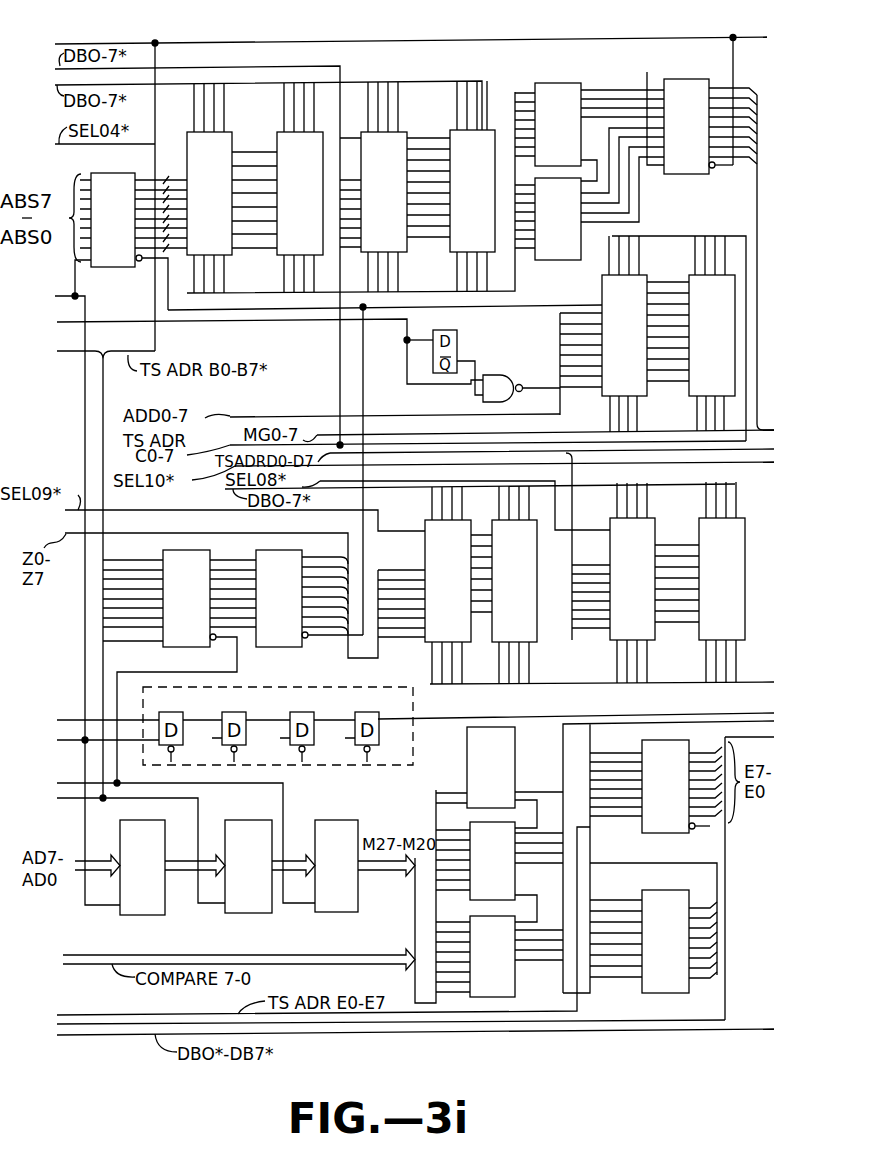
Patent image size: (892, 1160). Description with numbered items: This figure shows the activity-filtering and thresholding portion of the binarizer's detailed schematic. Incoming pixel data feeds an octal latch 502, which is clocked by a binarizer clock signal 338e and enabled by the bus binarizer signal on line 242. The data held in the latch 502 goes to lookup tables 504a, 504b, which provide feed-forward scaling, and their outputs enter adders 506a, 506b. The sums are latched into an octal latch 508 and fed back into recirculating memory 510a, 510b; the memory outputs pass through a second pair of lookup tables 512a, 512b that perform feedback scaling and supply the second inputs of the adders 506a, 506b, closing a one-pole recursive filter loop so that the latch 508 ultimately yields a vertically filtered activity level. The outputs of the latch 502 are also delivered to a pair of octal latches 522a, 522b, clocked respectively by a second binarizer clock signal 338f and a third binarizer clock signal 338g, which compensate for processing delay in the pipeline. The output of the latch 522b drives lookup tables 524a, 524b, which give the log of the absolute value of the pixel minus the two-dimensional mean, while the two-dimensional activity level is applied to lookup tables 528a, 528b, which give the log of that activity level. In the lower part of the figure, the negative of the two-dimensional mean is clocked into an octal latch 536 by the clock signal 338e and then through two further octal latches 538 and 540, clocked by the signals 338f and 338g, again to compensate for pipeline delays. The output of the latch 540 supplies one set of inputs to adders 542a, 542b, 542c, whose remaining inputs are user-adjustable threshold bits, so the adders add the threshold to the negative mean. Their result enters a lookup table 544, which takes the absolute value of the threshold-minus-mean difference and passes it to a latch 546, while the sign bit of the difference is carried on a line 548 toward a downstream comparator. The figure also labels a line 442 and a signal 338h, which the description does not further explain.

The line 242 is at (85, 43).
The octal latch 502 is at (128, 241).
The lookup table 504a is at (209, 188).
The lookup table 504b is at (300, 187).
The lookup table 512a is at (373, 187).
The lookup table 512b is at (472, 186).
The adder 506a is at (589, 132).
The adder 506b is at (589, 194).
The octal latch 508 is at (710, 251).
The recirculating memory 510a is at (603, 334).
The recirculating memory 510b is at (712, 333).
The BCLK5 signal 338e is at (75, 294).
The BCLK6 signal 338f is at (95, 321).
The BCLK7 signal 338g is at (77, 783).
The control line 338h is at (60, 1015).
The clock line 442 is at (78, 718).
The octal latch 522a is at (170, 666).
The octal latch 522b is at (309, 598).
The lookup table 524a is at (424, 585).
The lookup table 524b is at (514, 585).
The lookup table 528a is at (613, 583).
The lookup table 528b is at (722, 582).
The octal latch 536 is at (142, 867).
The octal latch 538 is at (248, 866).
The octal latch 540 is at (336, 866).
The adder 542a is at (499, 777).
The adder 542b is at (499, 872).
The adder 542c is at (499, 956).
The lookup table 544 is at (653, 928).
The latch 546 is at (656, 786).
The line 548 is at (562, 731).